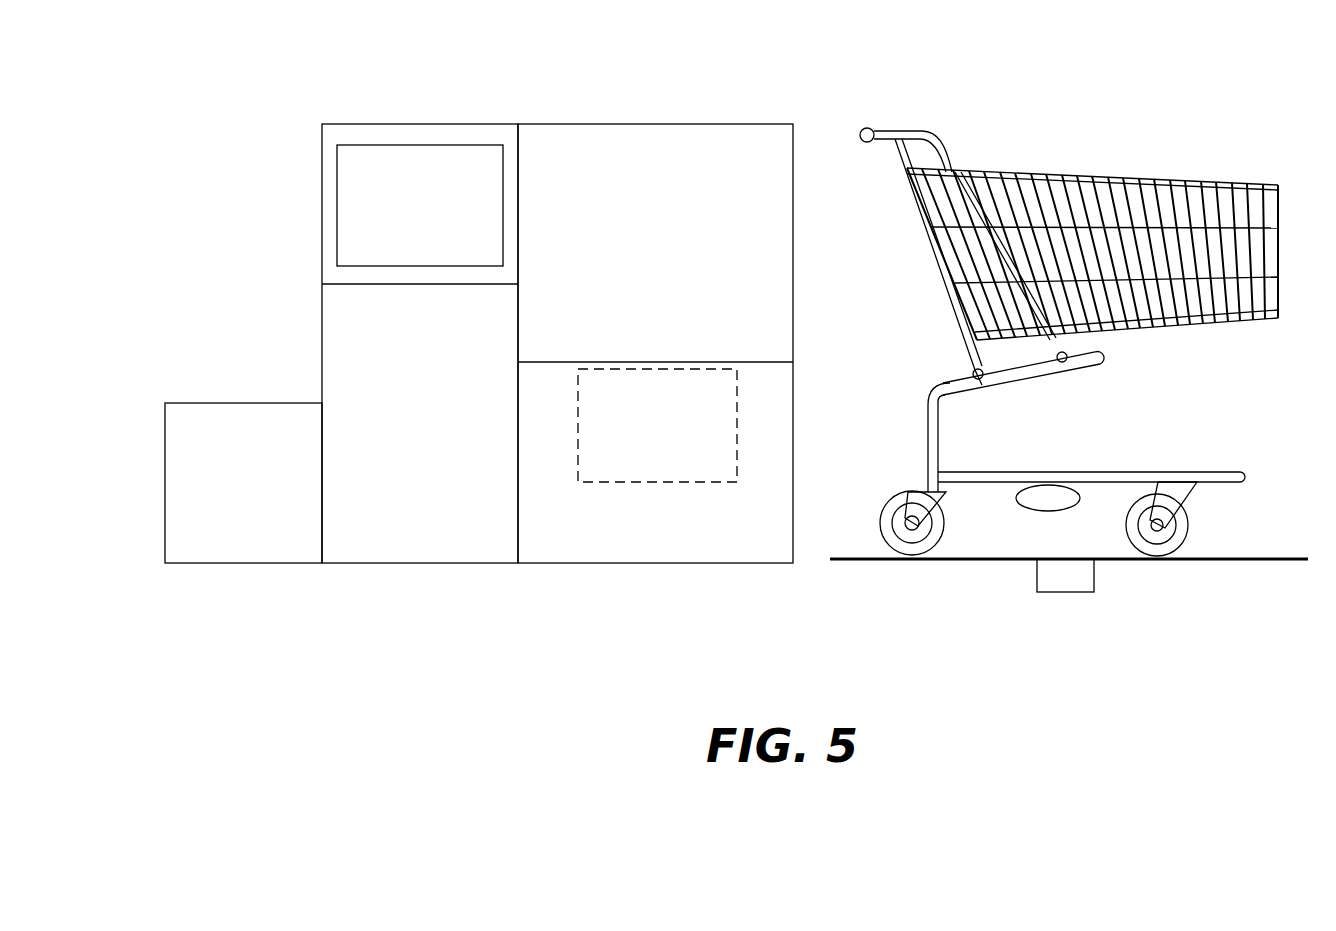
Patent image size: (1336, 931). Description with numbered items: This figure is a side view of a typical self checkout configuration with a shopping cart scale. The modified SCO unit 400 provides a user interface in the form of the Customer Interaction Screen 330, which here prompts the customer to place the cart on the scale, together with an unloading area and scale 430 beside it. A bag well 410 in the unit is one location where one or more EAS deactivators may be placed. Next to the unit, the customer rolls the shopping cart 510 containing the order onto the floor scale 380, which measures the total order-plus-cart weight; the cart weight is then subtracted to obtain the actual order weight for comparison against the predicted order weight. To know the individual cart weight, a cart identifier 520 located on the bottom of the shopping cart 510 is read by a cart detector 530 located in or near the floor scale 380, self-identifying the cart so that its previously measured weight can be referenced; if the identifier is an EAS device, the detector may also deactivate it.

The Customer Interaction Screen 330 is at (483, 153).
The modified SCO unit 400 is at (763, 124).
The unloading area and scale 430 is at (285, 403).
The bag well 410 is at (719, 483).
The shopping cart 510 is at (1067, 173).
The cart identifier 520 is at (1048, 511).
The cart detector 530 is at (1058, 593).
The floor scale 380 is at (1307, 560).